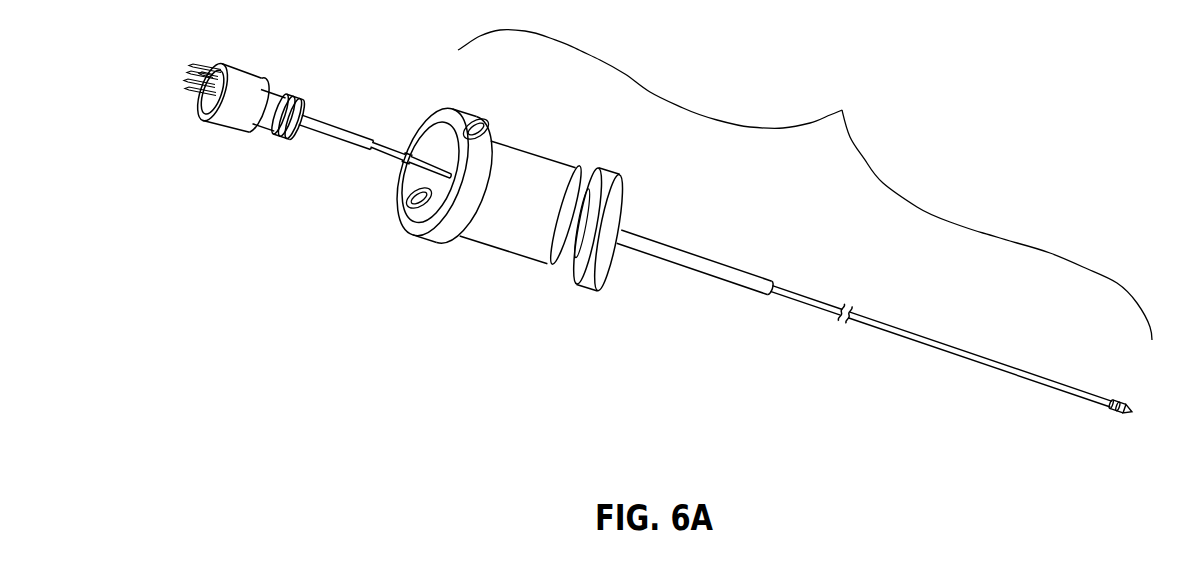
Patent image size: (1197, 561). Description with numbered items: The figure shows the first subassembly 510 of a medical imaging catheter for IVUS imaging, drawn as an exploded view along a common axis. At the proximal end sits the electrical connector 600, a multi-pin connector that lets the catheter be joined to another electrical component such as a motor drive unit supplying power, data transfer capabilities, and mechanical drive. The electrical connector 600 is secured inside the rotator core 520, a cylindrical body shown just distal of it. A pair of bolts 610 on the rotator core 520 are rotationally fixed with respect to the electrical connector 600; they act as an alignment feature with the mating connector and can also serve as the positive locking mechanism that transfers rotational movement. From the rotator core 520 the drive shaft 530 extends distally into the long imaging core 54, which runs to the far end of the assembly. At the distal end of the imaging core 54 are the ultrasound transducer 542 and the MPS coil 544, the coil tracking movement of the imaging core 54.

The first subassembly 510 is at (805, 185).
The electrical connector 600 is at (202, 104).
The rotator core 520 is at (500, 250).
The bolts 610 is at (478, 123).
The drive shaft 530 is at (682, 267).
The needle 54 is at (998, 372).
The MPS coil 544 is at (1117, 403).
The ultrasound transducer 542 is at (1127, 417).